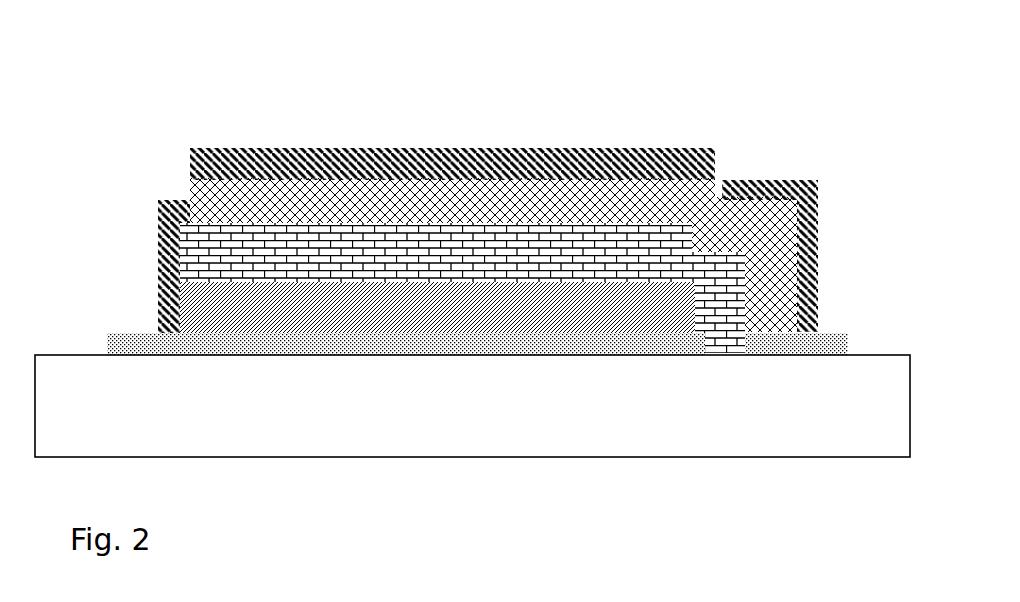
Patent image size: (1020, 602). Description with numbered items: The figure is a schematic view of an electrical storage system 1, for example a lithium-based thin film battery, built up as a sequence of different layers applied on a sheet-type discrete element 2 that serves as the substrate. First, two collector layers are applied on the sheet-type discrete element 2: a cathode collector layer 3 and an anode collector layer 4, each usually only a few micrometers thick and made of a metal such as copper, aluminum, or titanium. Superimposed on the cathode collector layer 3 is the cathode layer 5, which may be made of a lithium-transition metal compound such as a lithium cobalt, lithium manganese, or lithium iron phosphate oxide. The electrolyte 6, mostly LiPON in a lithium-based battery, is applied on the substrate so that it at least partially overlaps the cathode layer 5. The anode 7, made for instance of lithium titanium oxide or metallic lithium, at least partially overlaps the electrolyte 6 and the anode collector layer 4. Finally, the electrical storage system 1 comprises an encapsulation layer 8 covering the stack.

The electrical storage system 1 is at (468, 69).
The sheet-type discrete element 2 is at (420, 457).
The cathode collector layer 3 is at (130, 333).
The anode collector layer 4 is at (825, 332).
The cathode layer 5 is at (258, 312).
The electrolyte 6 is at (207, 247).
The anode 7 is at (612, 198).
The encapsulation layer 8 is at (817, 190).